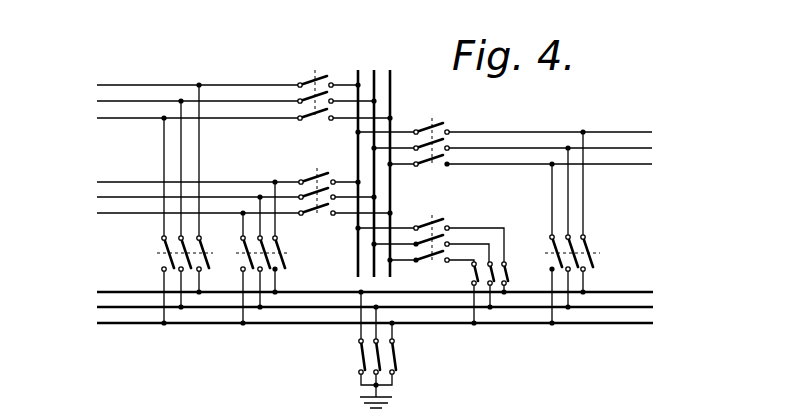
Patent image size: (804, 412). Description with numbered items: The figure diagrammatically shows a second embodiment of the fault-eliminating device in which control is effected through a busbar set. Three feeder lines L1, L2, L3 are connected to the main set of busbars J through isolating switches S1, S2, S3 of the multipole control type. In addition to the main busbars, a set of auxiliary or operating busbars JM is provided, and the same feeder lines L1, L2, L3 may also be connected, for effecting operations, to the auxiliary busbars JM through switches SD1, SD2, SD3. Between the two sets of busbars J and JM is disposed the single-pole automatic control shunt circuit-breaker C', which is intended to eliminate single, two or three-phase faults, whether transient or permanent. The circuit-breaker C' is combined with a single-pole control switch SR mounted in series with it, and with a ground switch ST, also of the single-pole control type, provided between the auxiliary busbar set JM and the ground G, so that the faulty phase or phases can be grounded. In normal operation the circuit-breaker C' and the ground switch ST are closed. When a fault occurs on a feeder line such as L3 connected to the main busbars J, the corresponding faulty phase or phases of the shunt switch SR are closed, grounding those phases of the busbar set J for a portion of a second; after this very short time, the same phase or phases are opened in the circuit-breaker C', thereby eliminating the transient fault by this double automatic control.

The feeder line L1 is at (184, 101).
The feeder line L2 is at (184, 197).
The feeder line L3 is at (560, 147).
The isolating switch S1 is at (345, 88).
The isolating switch S2 is at (346, 184).
The isolating switch S3 is at (402, 137).
The main set of busbars J is at (374, 161).
The single-pole control switch SR is at (429, 232).
The single-pole automatic control shunt circuit-breaker C' is at (499, 293).
The auxiliary or operating busbars JM is at (387, 307).
The switch SD1 is at (167, 205).
The switch SD2 is at (274, 254).
The switch SD3 is at (585, 229).
The ground switch ST is at (392, 343).
The ground G is at (383, 402).